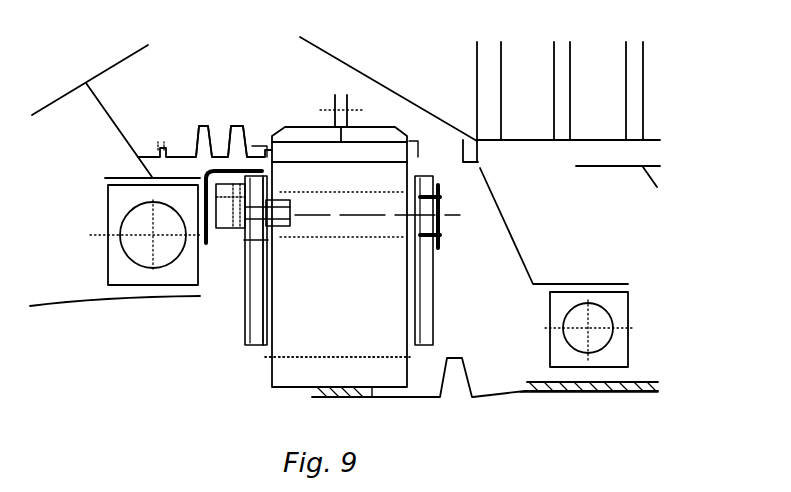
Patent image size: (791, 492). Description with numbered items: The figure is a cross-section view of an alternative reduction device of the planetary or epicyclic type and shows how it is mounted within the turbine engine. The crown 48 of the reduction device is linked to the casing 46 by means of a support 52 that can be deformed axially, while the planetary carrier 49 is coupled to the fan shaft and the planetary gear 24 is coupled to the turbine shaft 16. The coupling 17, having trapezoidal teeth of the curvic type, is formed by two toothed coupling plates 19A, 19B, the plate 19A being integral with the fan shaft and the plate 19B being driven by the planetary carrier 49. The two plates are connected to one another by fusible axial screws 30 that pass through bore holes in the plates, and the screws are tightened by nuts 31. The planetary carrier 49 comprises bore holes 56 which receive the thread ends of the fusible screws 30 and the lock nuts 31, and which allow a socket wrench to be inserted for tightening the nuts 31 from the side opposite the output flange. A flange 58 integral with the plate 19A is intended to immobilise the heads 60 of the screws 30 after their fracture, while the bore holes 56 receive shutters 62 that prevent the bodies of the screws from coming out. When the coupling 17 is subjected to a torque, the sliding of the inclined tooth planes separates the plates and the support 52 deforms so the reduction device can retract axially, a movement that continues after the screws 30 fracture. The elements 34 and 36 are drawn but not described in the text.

The turbine shaft 16 is at (535, 397).
The coupling 17 is at (232, 246).
The toothed coupling plate 19A is at (226, 244).
The toothed coupling plate 19B is at (248, 240).
The planetary gear 24 is at (378, 357).
The fusible axial screws 30 is at (238, 210).
The nuts 31 is at (282, 200).
The housing 34 is at (108, 220).
The housing 36 is at (598, 320).
The casing 46 is at (100, 107).
The crown 48 is at (373, 126).
The planetary carrier 49 is at (403, 195).
The support 52 is at (199, 126).
The bore holes 56 is at (357, 229).
The flange 58 is at (233, 168).
The heads 60 is at (223, 218).
The shutters 62 is at (441, 205).